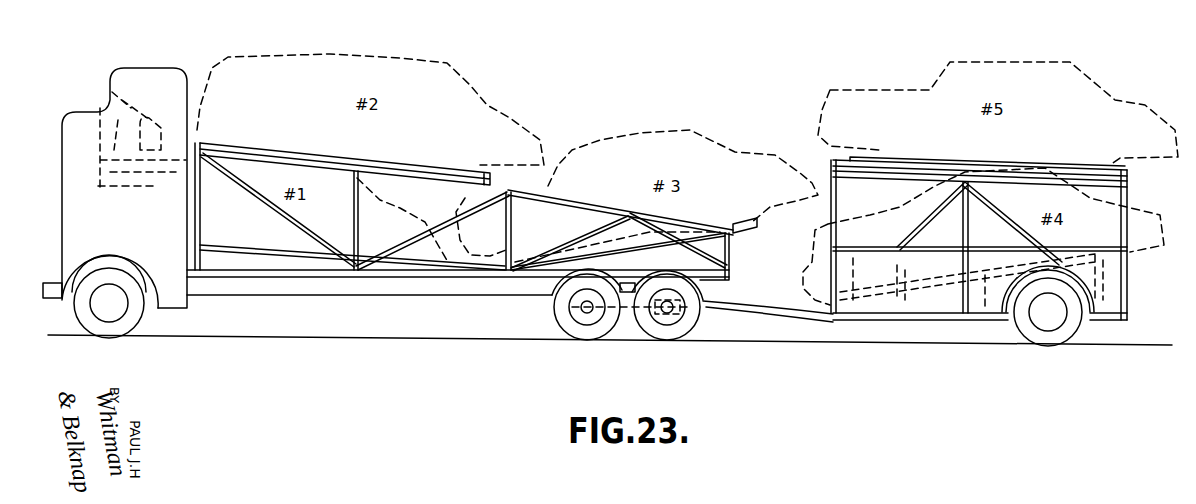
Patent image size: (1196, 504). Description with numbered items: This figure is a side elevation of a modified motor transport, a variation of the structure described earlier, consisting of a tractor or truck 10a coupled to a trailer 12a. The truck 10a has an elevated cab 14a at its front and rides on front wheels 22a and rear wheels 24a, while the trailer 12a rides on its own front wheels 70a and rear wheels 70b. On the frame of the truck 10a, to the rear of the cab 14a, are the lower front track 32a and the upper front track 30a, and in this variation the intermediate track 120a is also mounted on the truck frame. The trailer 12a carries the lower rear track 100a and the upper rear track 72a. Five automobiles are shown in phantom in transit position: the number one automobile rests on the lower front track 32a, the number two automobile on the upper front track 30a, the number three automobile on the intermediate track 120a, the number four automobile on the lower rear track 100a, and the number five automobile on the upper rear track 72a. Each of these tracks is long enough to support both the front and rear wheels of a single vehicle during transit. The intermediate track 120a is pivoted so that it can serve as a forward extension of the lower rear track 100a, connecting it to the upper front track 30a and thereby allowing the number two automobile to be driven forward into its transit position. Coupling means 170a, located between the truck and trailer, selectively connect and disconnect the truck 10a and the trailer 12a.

The elevated cab 14a is at (168, 68).
The front wheels 22a is at (145, 320).
The tractor or truck 10a is at (375, 297).
The upper front track 30a is at (428, 160).
The lower front track 32a is at (225, 250).
The intermediate track 120a is at (729, 246).
The rear wheels 24a is at (553, 318).
The front wheels 70a is at (700, 322).
The coupling means 170a is at (628, 313).
The trailer 12a is at (905, 322).
The upper rear track 72a is at (913, 158).
The lower rear track 100a is at (948, 308).
The rear wheels 70b is at (1032, 336).